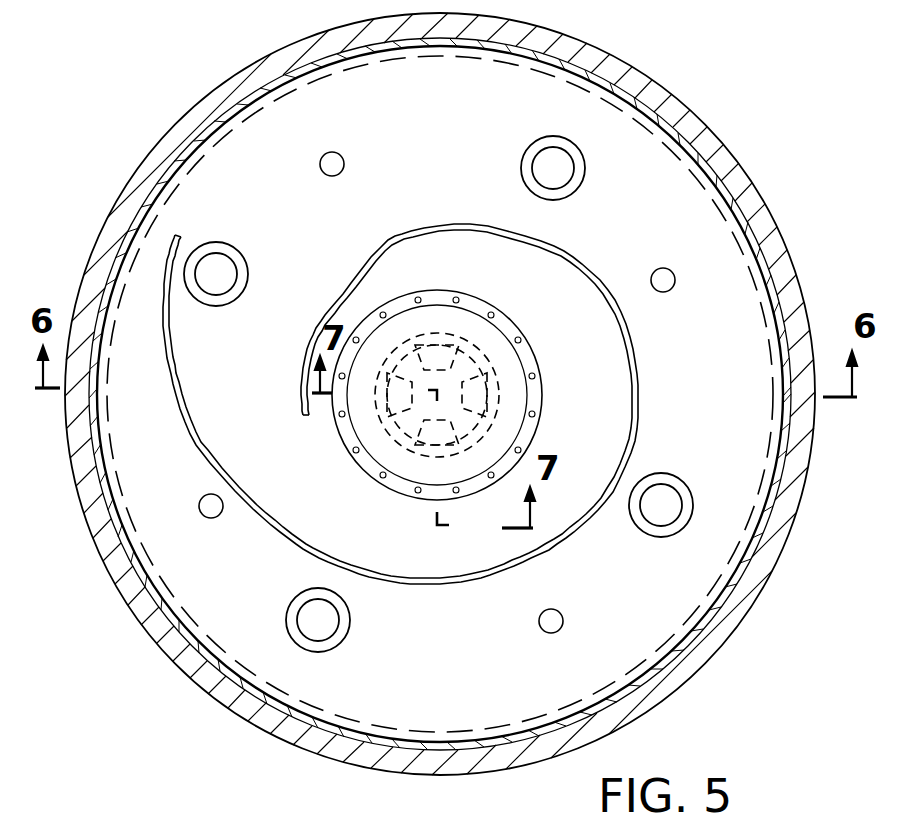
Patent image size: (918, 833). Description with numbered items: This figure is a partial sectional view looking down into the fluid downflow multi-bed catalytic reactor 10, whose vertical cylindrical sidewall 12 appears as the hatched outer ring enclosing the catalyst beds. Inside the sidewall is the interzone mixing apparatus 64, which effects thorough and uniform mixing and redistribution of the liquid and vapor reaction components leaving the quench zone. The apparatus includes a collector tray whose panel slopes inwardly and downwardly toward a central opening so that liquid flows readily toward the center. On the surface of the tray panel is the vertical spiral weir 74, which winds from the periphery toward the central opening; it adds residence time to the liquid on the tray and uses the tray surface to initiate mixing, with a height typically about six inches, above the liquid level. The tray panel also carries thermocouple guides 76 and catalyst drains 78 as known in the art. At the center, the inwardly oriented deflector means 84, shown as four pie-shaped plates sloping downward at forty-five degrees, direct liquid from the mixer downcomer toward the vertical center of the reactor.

The fluid downflow multi-bed catalytic reactor 10 is at (118, 86).
The vertical cylindrical sidewall 12 is at (143, 630).
The interzone mixing apparatus 64 is at (587, 246).
The vertical spiral weir 74 is at (195, 421).
The thermocouple guides 76 is at (350, 131).
The catalyst drains 78 is at (583, 157).
The deflector means 84 is at (503, 376).